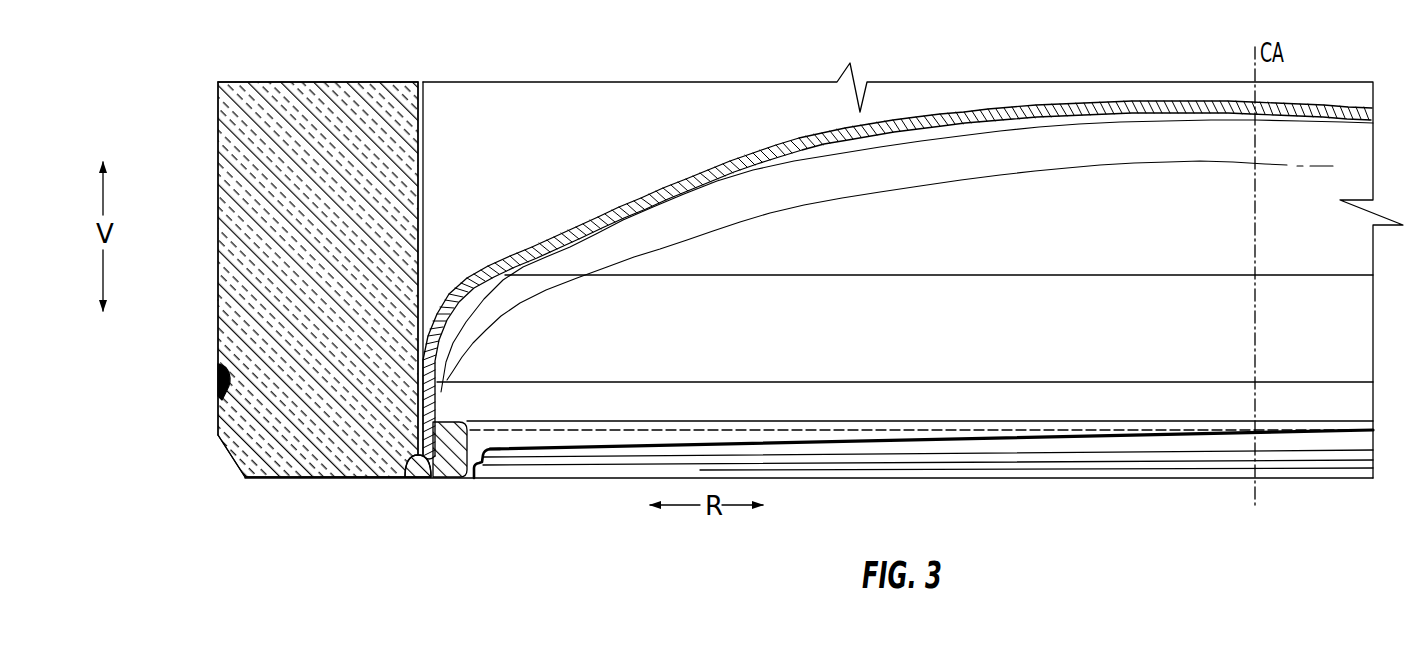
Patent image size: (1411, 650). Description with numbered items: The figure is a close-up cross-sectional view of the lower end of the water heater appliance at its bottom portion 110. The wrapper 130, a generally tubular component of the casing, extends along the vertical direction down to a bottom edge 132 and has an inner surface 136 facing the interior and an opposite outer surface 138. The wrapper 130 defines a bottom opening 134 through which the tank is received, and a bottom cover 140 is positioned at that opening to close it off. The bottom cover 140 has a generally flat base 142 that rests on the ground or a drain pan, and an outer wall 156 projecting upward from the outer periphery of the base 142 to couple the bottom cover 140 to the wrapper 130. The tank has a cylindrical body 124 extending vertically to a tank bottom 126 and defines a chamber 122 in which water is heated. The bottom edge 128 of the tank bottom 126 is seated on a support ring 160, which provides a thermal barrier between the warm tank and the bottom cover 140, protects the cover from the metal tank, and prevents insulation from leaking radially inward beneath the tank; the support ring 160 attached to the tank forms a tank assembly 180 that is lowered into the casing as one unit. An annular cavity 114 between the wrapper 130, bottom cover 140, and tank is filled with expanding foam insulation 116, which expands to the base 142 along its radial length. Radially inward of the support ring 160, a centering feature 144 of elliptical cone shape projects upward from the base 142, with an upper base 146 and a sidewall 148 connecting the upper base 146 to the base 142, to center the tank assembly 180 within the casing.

The bottom portion 110 is at (106, 374).
The annular cavity 114 is at (342, 93).
The insulation 116 is at (284, 96).
The chamber 122 is at (719, 101).
The body 124 is at (425, 110).
The tank bottom 126 is at (595, 223).
The bottom edge 128 is at (425, 476).
The wrapper 130 is at (240, 108).
The bottom edge 132 is at (213, 353).
The bottom opening 134 is at (303, 352).
The inner surface 136 is at (232, 142).
The outer surface 138 is at (214, 131).
The bottom cover 140 is at (240, 479).
The base 142 is at (330, 479).
The centering feature 144 is at (1065, 460).
The upper base 146 is at (843, 432).
The sidewall 148 is at (488, 466).
The outer wall 156 is at (218, 391).
The support ring 160 is at (447, 478).
The tank assembly 180 is at (435, 274).